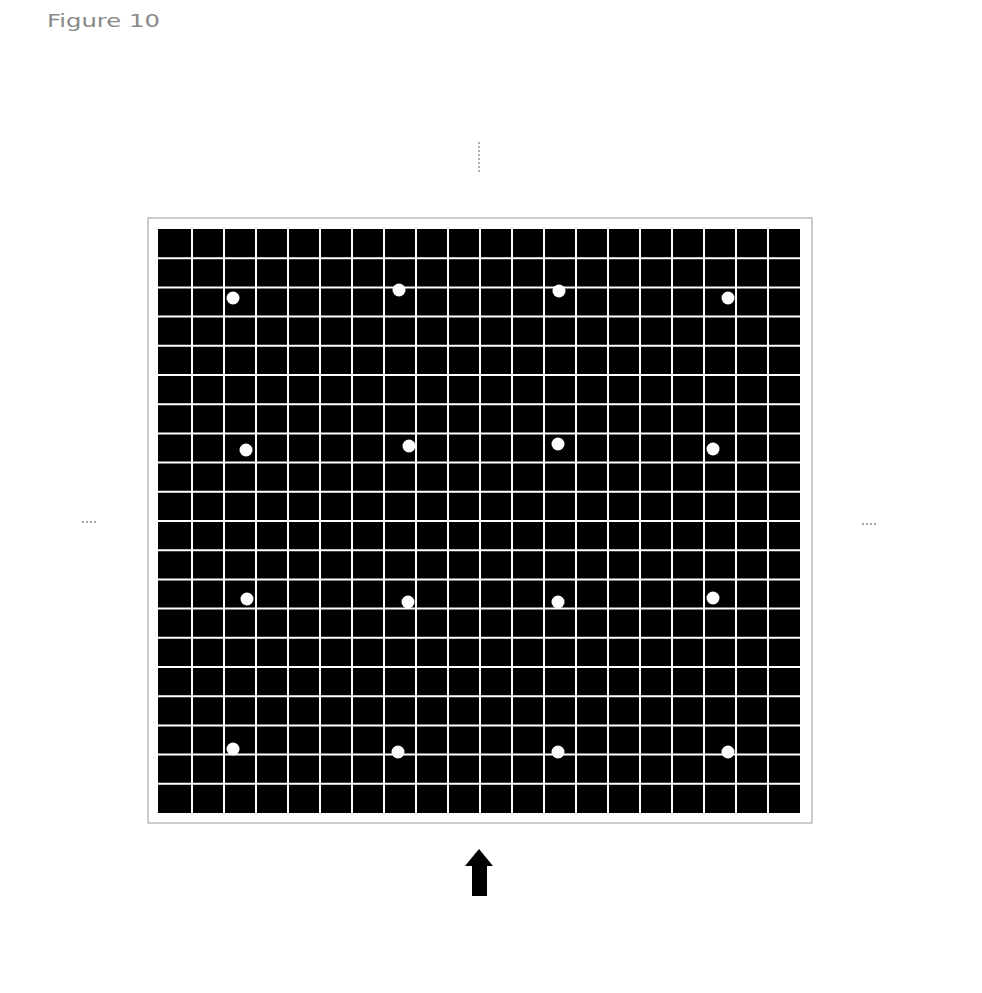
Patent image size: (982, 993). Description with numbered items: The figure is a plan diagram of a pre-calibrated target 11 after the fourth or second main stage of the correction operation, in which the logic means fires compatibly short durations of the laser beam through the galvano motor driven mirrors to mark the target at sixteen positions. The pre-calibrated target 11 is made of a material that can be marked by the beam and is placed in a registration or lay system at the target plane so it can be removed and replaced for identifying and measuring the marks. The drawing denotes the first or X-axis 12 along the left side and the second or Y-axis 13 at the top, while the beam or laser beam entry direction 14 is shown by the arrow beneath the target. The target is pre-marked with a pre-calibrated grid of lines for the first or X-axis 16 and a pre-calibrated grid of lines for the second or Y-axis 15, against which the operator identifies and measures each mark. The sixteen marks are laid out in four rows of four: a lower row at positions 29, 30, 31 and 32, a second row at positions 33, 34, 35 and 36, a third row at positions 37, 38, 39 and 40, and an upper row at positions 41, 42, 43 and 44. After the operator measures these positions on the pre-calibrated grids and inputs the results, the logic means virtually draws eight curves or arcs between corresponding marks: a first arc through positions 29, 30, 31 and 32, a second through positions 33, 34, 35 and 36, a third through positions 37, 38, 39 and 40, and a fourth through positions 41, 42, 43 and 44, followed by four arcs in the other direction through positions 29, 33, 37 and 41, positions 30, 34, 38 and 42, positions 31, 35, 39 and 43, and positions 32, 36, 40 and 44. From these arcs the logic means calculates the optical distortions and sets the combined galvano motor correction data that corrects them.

The pre-calibrated target 11 is at (868, 650).
The first or X-axis 12 is at (73, 533).
The second or Y-axis 13 is at (491, 147).
The beam or laser beam entry direction 14 is at (478, 894).
The pre-calibrated grid of lines for the second or Y-axis 15 is at (514, 854).
The pre-calibrated grid of lines for the first or X-axis 16 is at (113, 530).
The marked position 29 is at (234, 726).
The marked position 30 is at (399, 729).
The marked position 31 is at (559, 729).
The marked position 32 is at (731, 729).
The marked position 33 is at (250, 576).
The marked position 34 is at (414, 588).
The marked position 35 is at (559, 585).
The marked position 36 is at (717, 579).
The marked position 37 is at (253, 431).
The marked position 38 is at (414, 426).
The marked position 39 is at (559, 428).
The marked position 40 is at (721, 431).
The marked position 41 is at (230, 288).
The marked position 42 is at (400, 278).
The marked position 43 is at (559, 279).
The marked position 44 is at (731, 279).